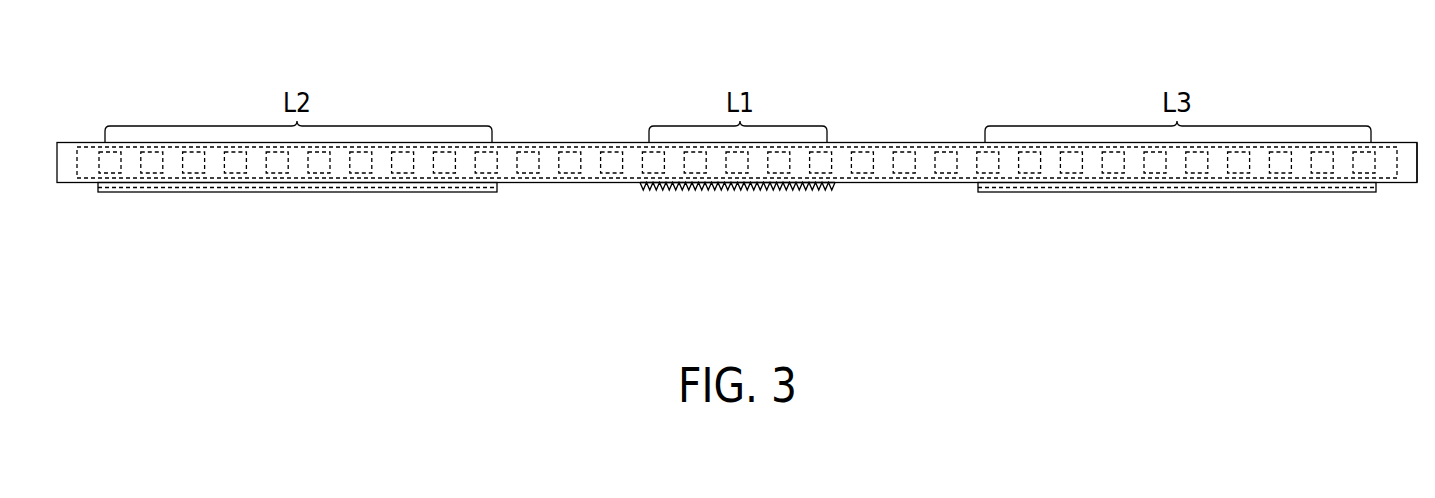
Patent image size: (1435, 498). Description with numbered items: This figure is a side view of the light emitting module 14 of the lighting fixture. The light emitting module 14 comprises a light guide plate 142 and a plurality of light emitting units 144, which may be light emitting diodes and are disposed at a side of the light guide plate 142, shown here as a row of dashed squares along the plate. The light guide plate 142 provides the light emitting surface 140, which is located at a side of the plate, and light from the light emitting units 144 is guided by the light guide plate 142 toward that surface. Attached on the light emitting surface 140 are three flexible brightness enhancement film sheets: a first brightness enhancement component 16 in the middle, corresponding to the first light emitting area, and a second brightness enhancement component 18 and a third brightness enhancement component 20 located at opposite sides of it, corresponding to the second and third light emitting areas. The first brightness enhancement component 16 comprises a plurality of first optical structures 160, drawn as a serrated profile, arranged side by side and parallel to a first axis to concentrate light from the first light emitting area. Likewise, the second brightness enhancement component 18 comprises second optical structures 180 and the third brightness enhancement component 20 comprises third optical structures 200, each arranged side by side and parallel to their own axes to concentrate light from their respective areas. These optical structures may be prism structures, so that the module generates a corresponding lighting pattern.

The light emitting module 14 is at (907, 110).
The light emitting surface 140 is at (895, 183).
The light guide plate 142 is at (1417, 163).
The light emitting units 144 is at (1375, 162).
The first brightness enhancement component 16 is at (638, 183).
The first optical structures 160 is at (737, 191).
The second brightness enhancement component 18 is at (497, 192).
The second optical structures 180 is at (300, 192).
The third brightness enhancement component 20 is at (978, 192).
The third optical structures 200 is at (1175, 193).